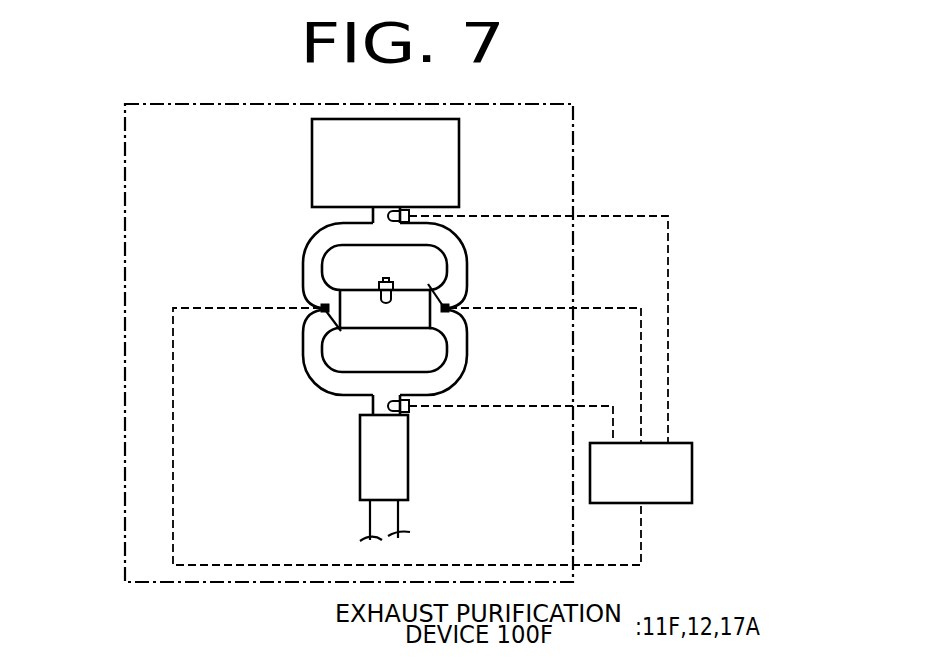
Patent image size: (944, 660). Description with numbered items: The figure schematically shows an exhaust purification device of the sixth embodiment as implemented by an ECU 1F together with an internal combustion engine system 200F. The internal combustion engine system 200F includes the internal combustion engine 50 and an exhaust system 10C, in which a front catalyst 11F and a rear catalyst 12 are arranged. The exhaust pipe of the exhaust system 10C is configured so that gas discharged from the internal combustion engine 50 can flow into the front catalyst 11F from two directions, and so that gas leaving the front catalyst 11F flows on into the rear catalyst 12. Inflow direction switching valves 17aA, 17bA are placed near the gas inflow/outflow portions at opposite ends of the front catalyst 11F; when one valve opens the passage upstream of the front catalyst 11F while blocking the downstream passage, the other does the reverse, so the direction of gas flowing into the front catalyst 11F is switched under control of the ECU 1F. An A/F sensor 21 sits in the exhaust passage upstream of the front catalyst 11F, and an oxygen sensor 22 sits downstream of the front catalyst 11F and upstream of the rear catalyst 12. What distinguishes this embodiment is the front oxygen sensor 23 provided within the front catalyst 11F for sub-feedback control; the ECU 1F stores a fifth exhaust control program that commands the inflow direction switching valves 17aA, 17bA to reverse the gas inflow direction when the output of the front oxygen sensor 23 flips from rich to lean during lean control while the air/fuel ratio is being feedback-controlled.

The exhaust system 10C is at (230, 194).
The front catalyst 11F is at (374, 289).
The internal combustion engine 50 is at (460, 164).
The A/F sensor 21 is at (412, 217).
The front oxygen sensor 23 is at (388, 278).
The inflow direction switching valve 17aA is at (320, 309).
The inflow direction switching valve 17bA is at (449, 309).
The rear catalyst 12 is at (360, 449).
The oxygen sensor 22 is at (410, 405).
The internal combustion engine system 200F is at (123, 546).
The ECU 1F is at (654, 503).